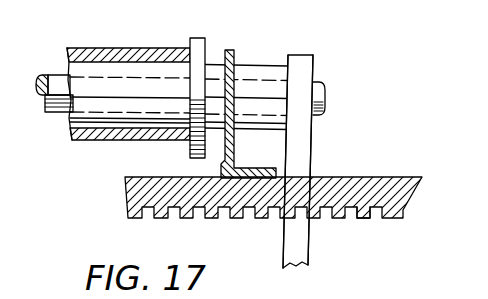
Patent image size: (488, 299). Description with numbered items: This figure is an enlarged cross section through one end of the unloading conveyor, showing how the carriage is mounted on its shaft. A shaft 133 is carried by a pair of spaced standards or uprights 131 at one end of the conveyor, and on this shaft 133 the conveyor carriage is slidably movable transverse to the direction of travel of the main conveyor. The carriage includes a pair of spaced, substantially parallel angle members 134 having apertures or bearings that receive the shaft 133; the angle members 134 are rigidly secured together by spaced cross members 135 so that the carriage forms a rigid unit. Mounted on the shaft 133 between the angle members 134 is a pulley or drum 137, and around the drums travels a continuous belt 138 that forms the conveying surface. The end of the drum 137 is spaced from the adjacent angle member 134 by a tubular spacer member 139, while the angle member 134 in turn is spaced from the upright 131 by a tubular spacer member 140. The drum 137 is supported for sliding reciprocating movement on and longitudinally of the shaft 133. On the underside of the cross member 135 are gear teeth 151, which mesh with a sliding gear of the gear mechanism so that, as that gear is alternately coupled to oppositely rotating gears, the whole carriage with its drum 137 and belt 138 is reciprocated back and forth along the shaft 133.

The upright 131 is at (302, 150).
The shaft 133 is at (48, 112).
The angle member 134 is at (234, 50).
The cross member 135 is at (383, 185).
The pulley or drum 137 is at (152, 68).
The continuous belt 138 is at (97, 53).
The tubular spacer member 139 is at (210, 70).
The tubular spacer member 140 is at (260, 73).
The gear teeth 151 is at (361, 222).